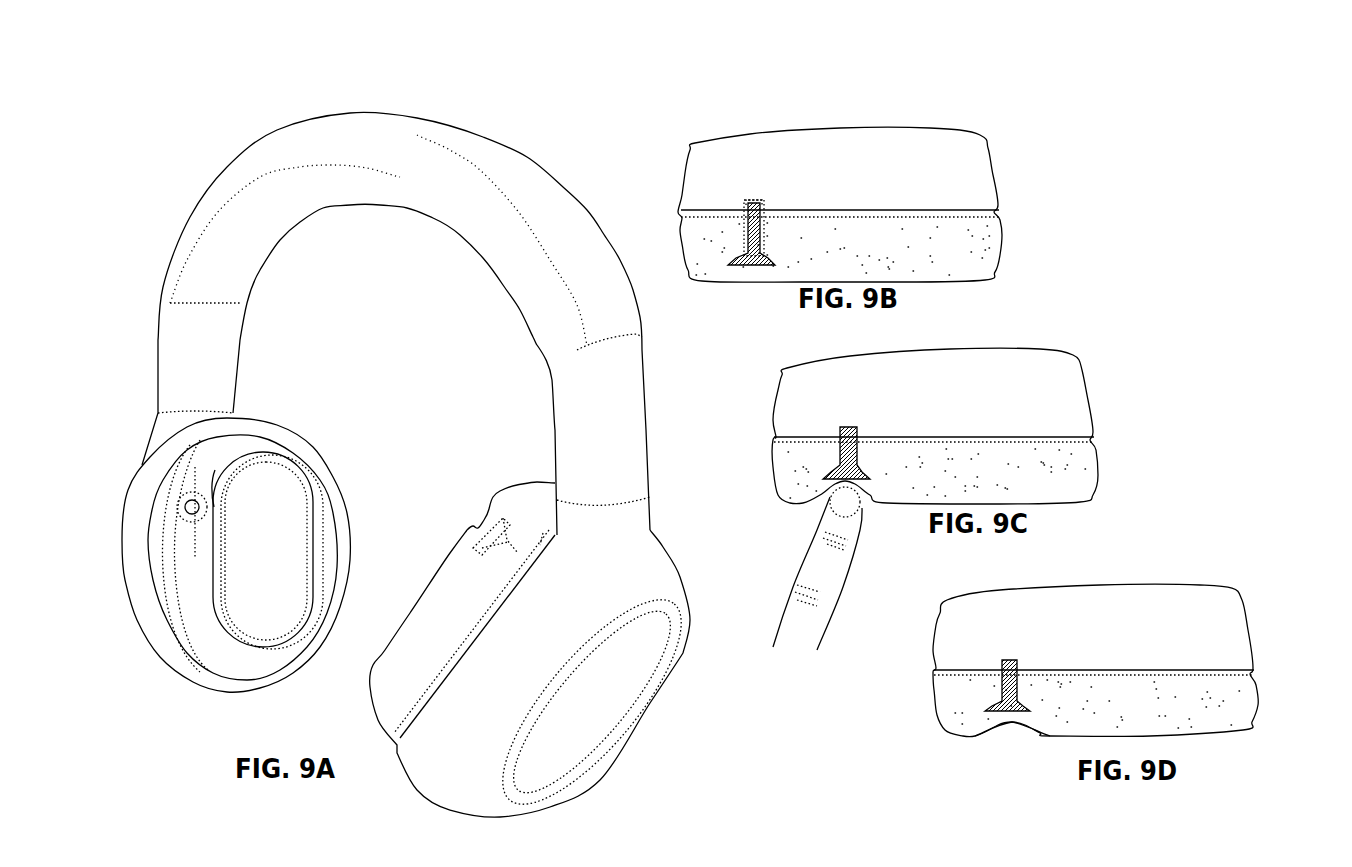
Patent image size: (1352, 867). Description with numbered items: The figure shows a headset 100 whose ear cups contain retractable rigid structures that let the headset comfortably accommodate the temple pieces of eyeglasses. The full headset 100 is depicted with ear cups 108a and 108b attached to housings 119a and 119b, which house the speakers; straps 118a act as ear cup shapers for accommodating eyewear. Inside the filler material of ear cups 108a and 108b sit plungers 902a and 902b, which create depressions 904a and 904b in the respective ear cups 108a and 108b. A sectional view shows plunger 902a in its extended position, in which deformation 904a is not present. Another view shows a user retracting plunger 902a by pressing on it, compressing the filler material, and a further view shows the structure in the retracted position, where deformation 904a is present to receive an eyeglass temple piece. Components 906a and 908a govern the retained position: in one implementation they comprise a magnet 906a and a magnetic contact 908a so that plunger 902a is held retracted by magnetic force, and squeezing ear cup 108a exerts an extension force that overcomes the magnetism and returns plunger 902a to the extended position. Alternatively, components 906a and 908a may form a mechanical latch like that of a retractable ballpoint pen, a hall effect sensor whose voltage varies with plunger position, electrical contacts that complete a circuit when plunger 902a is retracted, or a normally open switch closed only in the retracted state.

In FIG. 9A, the headset 100 is at (127, 169).
In FIG. 9A, the housing 119a is at (143, 462).
In FIG. 9B, the housing 119a is at (990, 178).
In FIG. 9C, the housing 119a is at (1083, 393).
In FIG. 9A, the housing 119b is at (674, 564).
In FIG. 9D, the housing 119b is at (1245, 629).
In FIG. 9A, the ear cup 108a is at (311, 446).
In FIG. 9A, the ear cup 108b is at (414, 594).
In FIG. 9B, the strap 118a is at (1005, 238).
In FIG. 9C, the strap 118a is at (1095, 475).
In FIG. 9D, the strap 118a is at (1255, 703).
In FIG. 9A, the plunger 902a is at (182, 523).
In FIG. 9B, the plunger 902a is at (755, 253).
In FIG. 9A, the plunger 902b is at (500, 548).
In FIG. 9A, the depression 904a is at (217, 504).
In FIG. 9D, the depression 904a is at (1015, 739).
In FIG. 9A, the depression 904b is at (471, 515).
In FIG. 9B, the magnet 906a is at (748, 218).
In FIG. 9B, the magnetic contact 908a is at (767, 192).